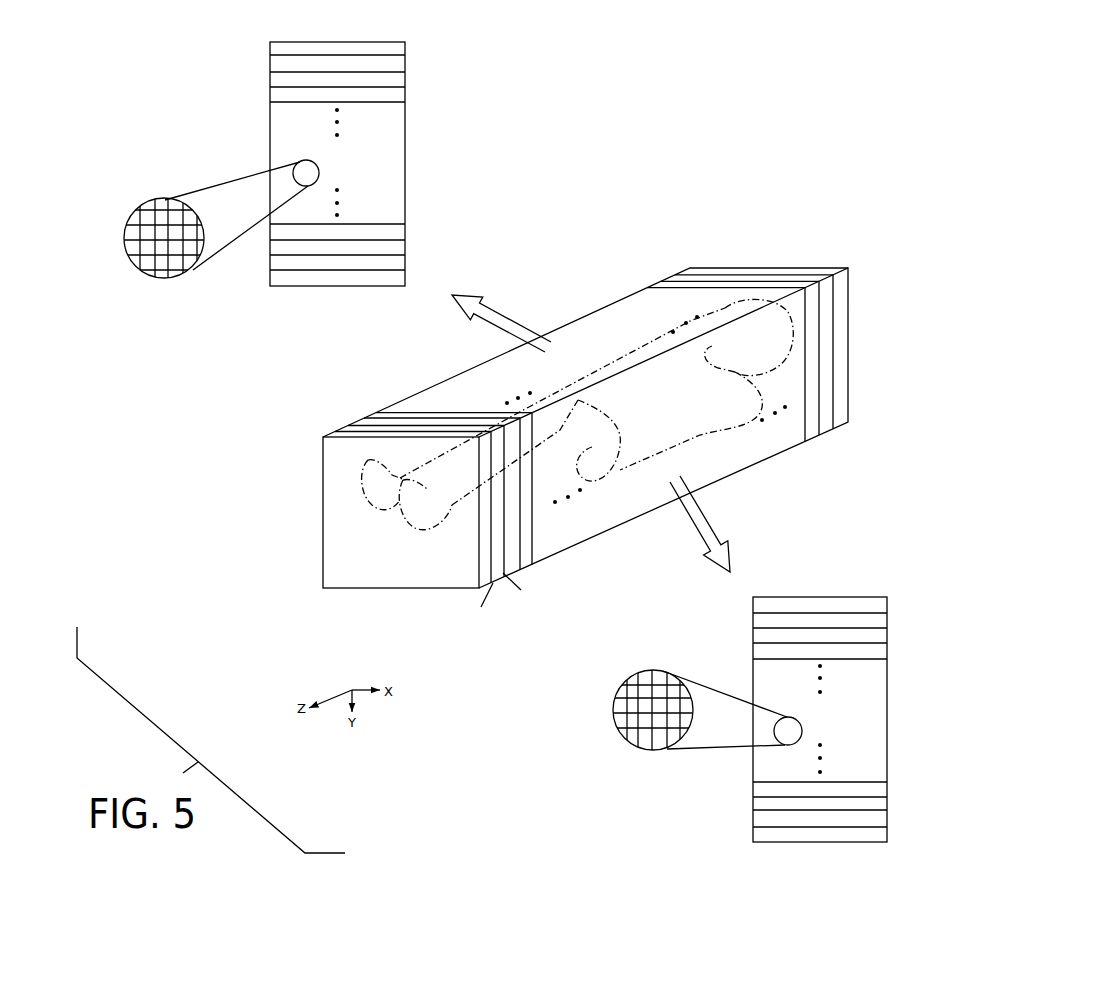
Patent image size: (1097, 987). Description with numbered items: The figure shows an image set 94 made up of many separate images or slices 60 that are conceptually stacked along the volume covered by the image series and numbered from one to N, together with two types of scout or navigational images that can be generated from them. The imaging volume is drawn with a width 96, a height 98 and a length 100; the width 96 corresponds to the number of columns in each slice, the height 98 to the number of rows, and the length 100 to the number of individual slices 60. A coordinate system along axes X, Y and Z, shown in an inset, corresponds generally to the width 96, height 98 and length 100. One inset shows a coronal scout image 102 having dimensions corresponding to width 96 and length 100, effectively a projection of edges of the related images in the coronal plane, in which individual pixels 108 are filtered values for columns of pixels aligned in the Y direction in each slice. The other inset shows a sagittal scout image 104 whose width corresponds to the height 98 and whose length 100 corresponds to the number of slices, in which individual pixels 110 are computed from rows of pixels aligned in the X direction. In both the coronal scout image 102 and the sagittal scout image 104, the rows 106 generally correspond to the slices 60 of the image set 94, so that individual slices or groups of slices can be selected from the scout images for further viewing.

The slices 60 is at (838, 327).
The image set 94 is at (743, 483).
The width 96 is at (270, 13).
The height 98 is at (297, 437).
The length 100 is at (306, 419).
The coronal scout image 102 is at (270, 140).
The sagittal scout image 104 is at (753, 685).
The rows 106 is at (128, 237).
The pixels of the coronal scout 108 is at (177, 245).
The pixels of the sagittal scout image 110 is at (668, 725).